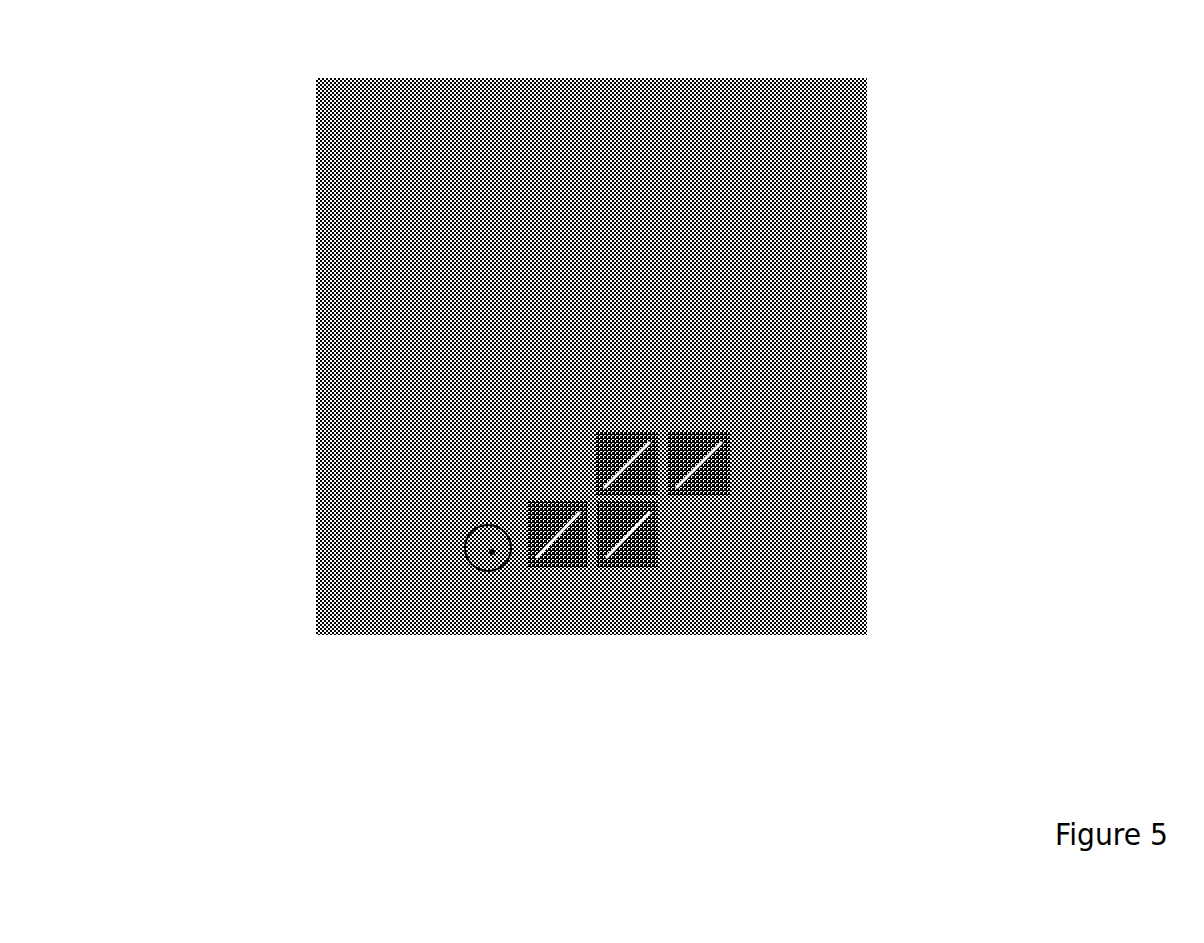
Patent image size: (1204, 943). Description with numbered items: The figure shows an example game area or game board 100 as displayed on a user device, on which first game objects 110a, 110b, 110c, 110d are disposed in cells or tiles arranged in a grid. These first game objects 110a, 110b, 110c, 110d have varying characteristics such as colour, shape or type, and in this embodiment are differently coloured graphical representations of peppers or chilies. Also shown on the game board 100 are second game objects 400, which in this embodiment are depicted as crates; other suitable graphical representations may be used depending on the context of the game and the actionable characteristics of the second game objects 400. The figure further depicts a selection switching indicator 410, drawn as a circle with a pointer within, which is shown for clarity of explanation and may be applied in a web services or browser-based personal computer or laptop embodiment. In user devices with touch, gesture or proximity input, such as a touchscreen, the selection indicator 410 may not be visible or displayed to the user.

The game area 100 is at (895, 638).
The first game object 110a is at (415, 462).
The first game object 110b is at (350, 334).
The first game object 110c is at (557, 117).
The first game object 110d is at (763, 115).
The second game object 400 is at (722, 461).
The selection switching indicator 410 is at (468, 565).